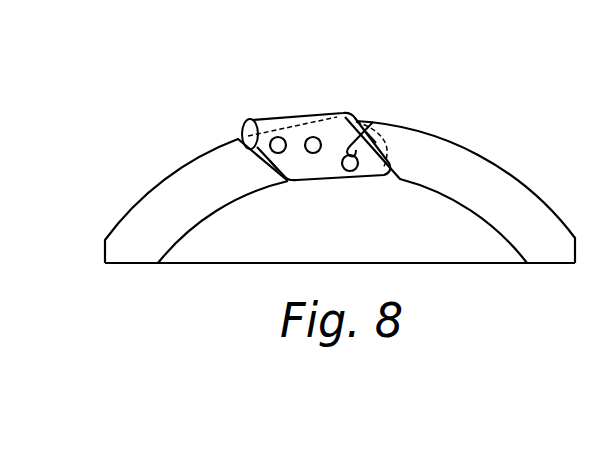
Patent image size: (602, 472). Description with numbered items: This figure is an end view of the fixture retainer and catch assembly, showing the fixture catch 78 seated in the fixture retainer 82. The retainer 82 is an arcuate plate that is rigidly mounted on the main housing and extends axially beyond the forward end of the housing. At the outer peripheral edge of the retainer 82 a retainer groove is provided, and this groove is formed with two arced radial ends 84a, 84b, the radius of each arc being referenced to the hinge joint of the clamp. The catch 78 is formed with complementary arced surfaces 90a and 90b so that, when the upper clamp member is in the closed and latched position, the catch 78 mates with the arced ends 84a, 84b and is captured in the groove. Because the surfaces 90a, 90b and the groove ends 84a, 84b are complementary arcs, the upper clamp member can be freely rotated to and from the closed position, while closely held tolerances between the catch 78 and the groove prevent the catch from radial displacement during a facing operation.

The fixture catch 78 is at (281, 108).
The fixture retainer 82 is at (492, 183).
The arced radial end 84a is at (248, 137).
The arced radial end 84b is at (373, 122).
The arced surface 90a is at (268, 160).
The arced surface 90b is at (372, 142).